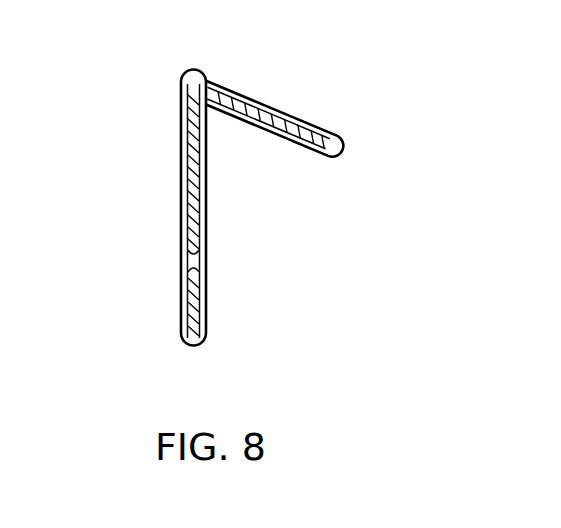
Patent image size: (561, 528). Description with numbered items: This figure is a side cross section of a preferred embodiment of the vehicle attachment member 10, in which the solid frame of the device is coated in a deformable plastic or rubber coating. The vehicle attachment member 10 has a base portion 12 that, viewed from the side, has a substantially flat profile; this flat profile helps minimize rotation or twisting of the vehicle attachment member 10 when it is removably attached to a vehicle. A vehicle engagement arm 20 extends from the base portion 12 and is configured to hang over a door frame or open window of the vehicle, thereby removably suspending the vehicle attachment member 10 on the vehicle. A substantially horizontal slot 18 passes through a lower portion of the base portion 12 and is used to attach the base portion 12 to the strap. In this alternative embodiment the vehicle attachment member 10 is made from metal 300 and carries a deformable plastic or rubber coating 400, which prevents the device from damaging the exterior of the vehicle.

The vehicle attachment member 10 is at (158, 197).
The base portion 12 is at (205, 192).
The slot 18 is at (192, 265).
The vehicle engagement arm 20 is at (244, 90).
The metal 300 is at (312, 140).
The deformable plastic or rubber coating 400 is at (315, 127).